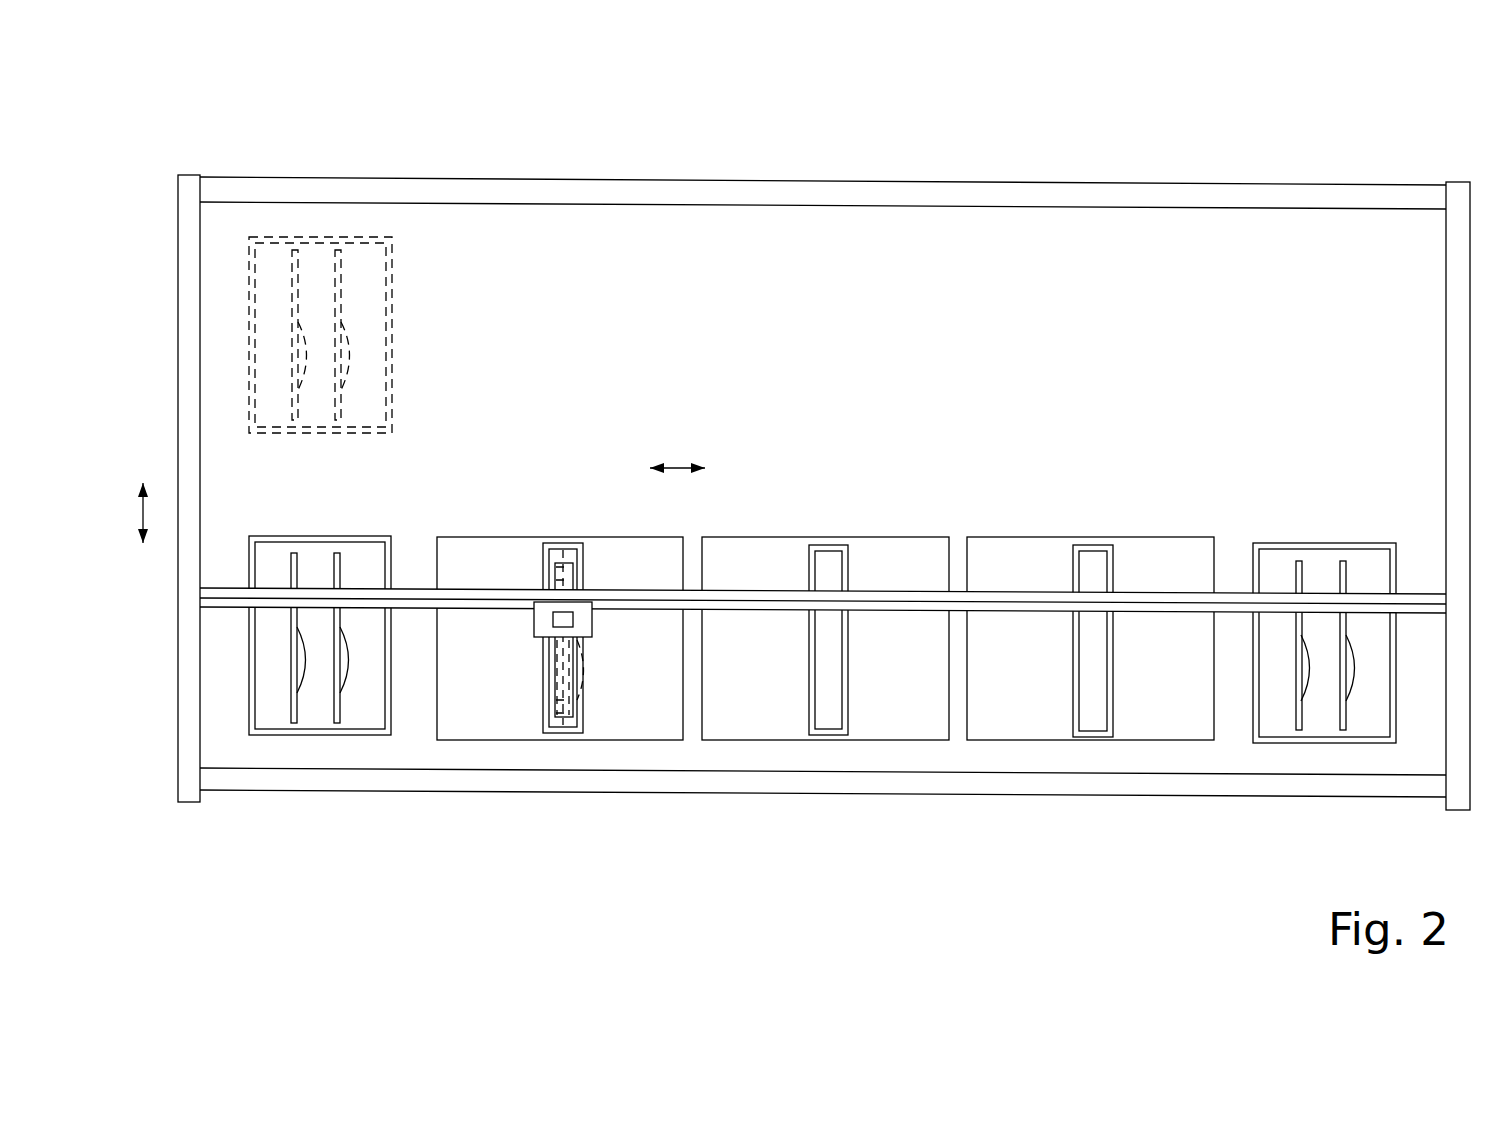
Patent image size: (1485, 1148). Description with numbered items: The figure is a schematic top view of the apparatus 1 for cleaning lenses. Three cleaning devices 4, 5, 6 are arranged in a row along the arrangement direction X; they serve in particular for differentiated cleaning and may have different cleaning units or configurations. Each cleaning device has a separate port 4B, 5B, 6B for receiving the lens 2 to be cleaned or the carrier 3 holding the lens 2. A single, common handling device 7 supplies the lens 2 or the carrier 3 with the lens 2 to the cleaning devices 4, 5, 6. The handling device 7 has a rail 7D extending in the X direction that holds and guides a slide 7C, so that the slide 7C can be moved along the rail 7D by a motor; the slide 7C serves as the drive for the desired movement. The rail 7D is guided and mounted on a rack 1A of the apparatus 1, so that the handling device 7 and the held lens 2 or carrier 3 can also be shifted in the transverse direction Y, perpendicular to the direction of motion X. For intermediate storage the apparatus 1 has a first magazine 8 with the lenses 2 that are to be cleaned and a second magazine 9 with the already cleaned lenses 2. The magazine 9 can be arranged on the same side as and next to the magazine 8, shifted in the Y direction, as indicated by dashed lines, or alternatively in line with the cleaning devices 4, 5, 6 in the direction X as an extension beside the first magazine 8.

The apparatus 1 is at (250, 122).
The rack 1A is at (192, 686).
The lens 2 is at (345, 665).
The carrier 3 is at (298, 700).
The cleaning device 4 is at (467, 535).
The port 4B is at (555, 545).
The cleaning device 5 is at (741, 535).
The port 5B is at (830, 545).
The cleaning device 6 is at (1006, 540).
The port 6B is at (1095, 548).
The handling device 7 is at (523, 578).
The slide 7C is at (585, 607).
The rail 7D is at (410, 600).
The magazine 8 is at (257, 535).
The second magazine 9 is at (1290, 543).
The arrangement direction X is at (676, 468).
The transverse direction Y is at (142, 510).